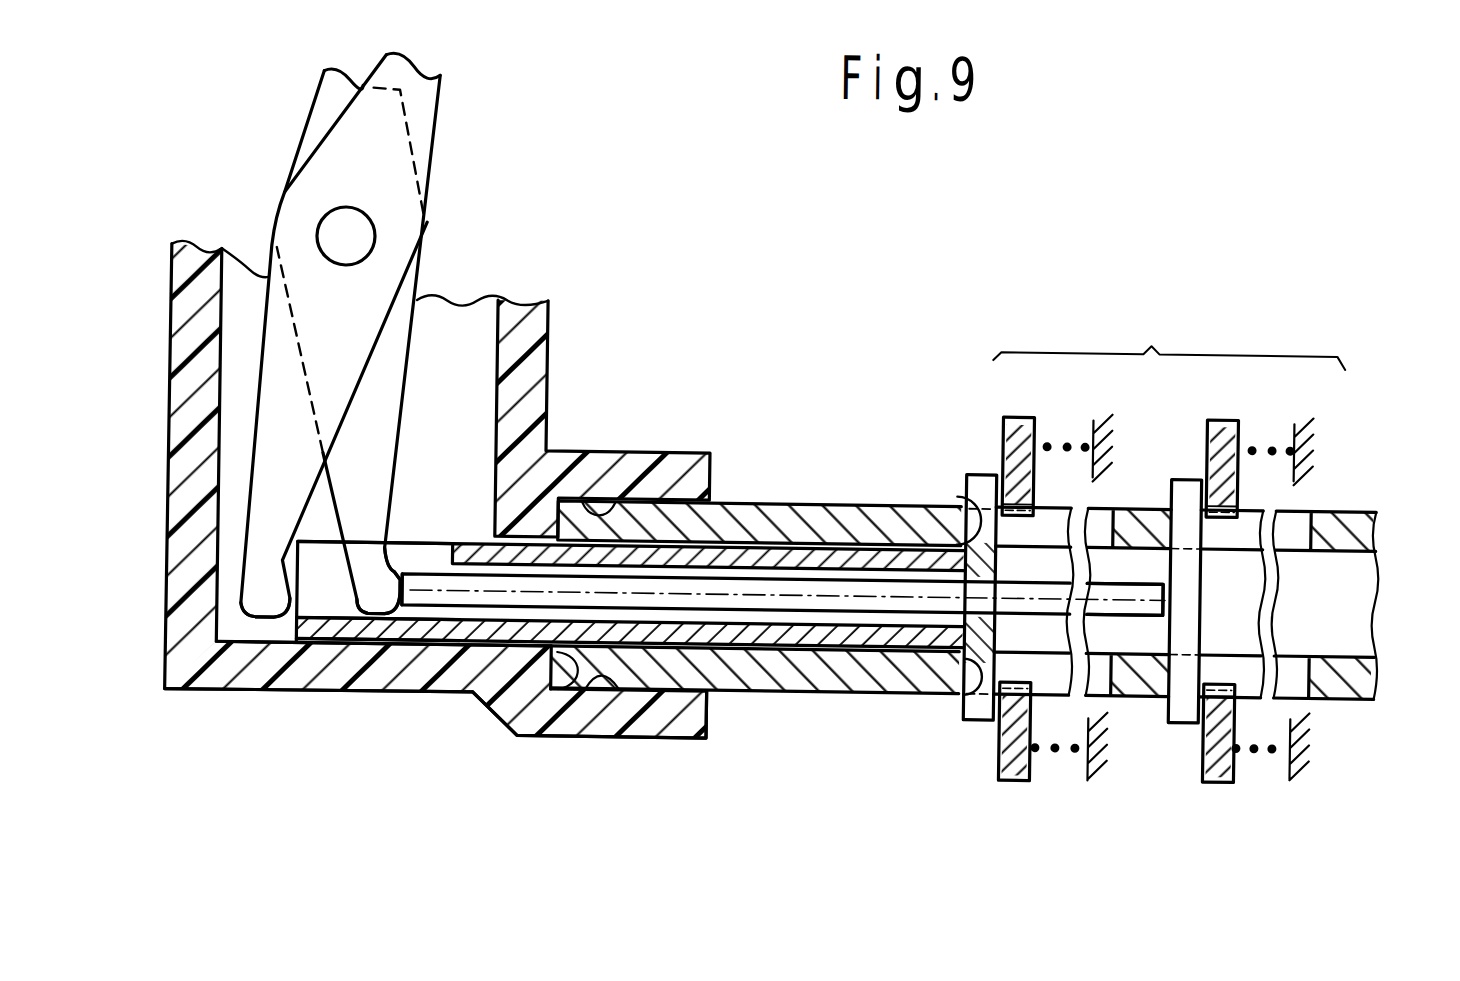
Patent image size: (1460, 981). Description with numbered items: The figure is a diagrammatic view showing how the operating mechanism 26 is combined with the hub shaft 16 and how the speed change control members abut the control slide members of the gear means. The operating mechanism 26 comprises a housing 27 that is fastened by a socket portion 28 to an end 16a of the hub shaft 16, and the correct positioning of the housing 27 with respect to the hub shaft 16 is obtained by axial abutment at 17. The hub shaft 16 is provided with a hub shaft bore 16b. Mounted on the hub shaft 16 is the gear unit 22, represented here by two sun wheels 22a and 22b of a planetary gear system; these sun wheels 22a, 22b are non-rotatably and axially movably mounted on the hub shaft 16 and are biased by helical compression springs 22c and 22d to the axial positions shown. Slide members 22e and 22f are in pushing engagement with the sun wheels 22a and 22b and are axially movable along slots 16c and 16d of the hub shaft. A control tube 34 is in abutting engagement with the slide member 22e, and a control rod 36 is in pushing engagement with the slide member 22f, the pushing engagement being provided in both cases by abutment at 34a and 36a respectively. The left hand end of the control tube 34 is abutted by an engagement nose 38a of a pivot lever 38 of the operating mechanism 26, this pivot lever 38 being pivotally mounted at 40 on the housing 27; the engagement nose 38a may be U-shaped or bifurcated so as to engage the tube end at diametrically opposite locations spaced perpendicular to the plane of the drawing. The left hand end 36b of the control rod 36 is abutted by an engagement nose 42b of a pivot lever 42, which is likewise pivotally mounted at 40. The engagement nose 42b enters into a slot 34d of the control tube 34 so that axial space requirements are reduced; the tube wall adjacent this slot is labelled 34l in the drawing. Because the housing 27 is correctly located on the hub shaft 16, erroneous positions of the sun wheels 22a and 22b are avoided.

The hub shaft 16 is at (791, 526).
The end of the hub shaft 16a is at (658, 673).
The hub shaft bore 16b is at (1331, 642).
The slot of the hub shaft 16c is at (1099, 511).
The slot of the hub shaft 16d is at (1294, 516).
The axial abutment 17 is at (578, 672).
The gear unit 22 is at (1169, 336).
The sun wheel 22a is at (1015, 423).
The sun wheel 22b is at (1216, 415).
The helical compression spring 22c is at (1065, 435).
The helical compression spring 22d is at (1266, 432).
The slide member 22e is at (981, 478).
The slide member 22f is at (1182, 705).
The operating mechanism 26 is at (174, 707).
The housing 27 is at (299, 698).
The socket portion 28 is at (660, 473).
The control tube 34 is at (793, 632).
The abutment 34a is at (969, 509).
The slot of the control tube 34d is at (432, 560).
The sleeve wall 34l is at (340, 637).
The control rod 36 is at (907, 602).
The abutment 36a is at (1178, 597).
The left hand end of the control rod 36b is at (420, 609).
The pivot lever 38 is at (267, 405).
The engagement nose 38a is at (285, 596).
The pivot 40 is at (348, 237).
The pivot lever 42 is at (389, 358).
The engagement nose 42b is at (397, 589).